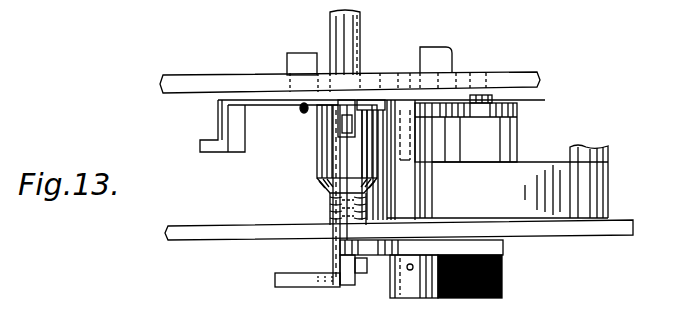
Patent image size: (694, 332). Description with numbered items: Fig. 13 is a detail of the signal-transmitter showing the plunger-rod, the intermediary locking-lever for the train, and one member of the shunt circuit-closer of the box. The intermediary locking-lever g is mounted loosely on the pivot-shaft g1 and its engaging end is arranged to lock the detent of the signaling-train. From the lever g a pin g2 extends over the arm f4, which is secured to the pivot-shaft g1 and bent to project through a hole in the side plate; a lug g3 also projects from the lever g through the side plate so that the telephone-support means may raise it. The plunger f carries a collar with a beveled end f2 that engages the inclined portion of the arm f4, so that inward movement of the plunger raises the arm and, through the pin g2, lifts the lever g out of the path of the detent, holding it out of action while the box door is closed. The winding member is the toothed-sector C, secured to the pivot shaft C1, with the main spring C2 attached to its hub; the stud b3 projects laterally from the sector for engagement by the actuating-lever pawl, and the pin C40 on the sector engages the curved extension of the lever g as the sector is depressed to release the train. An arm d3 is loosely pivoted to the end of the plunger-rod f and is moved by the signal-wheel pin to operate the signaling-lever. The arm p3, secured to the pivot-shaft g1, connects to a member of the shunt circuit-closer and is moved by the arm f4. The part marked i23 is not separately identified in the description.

The intermediary locking-lever g is at (256, 100).
The pivot-shaft g1 is at (402, 100).
The pin g2 is at (345, 113).
The lug g3 is at (306, 60).
The stud b3 is at (441, 56).
The toothed-sector C is at (513, 106).
The pivot shaft C1 is at (487, 92).
The main spring C2 is at (550, 172).
The pin C40 is at (454, 92).
The column i23 is at (402, 152).
The plunger f is at (337, 262).
The beveled end f2 is at (328, 196).
The arm f4 is at (345, 166).
The arm d3 is at (312, 282).
The arm p3 is at (382, 256).